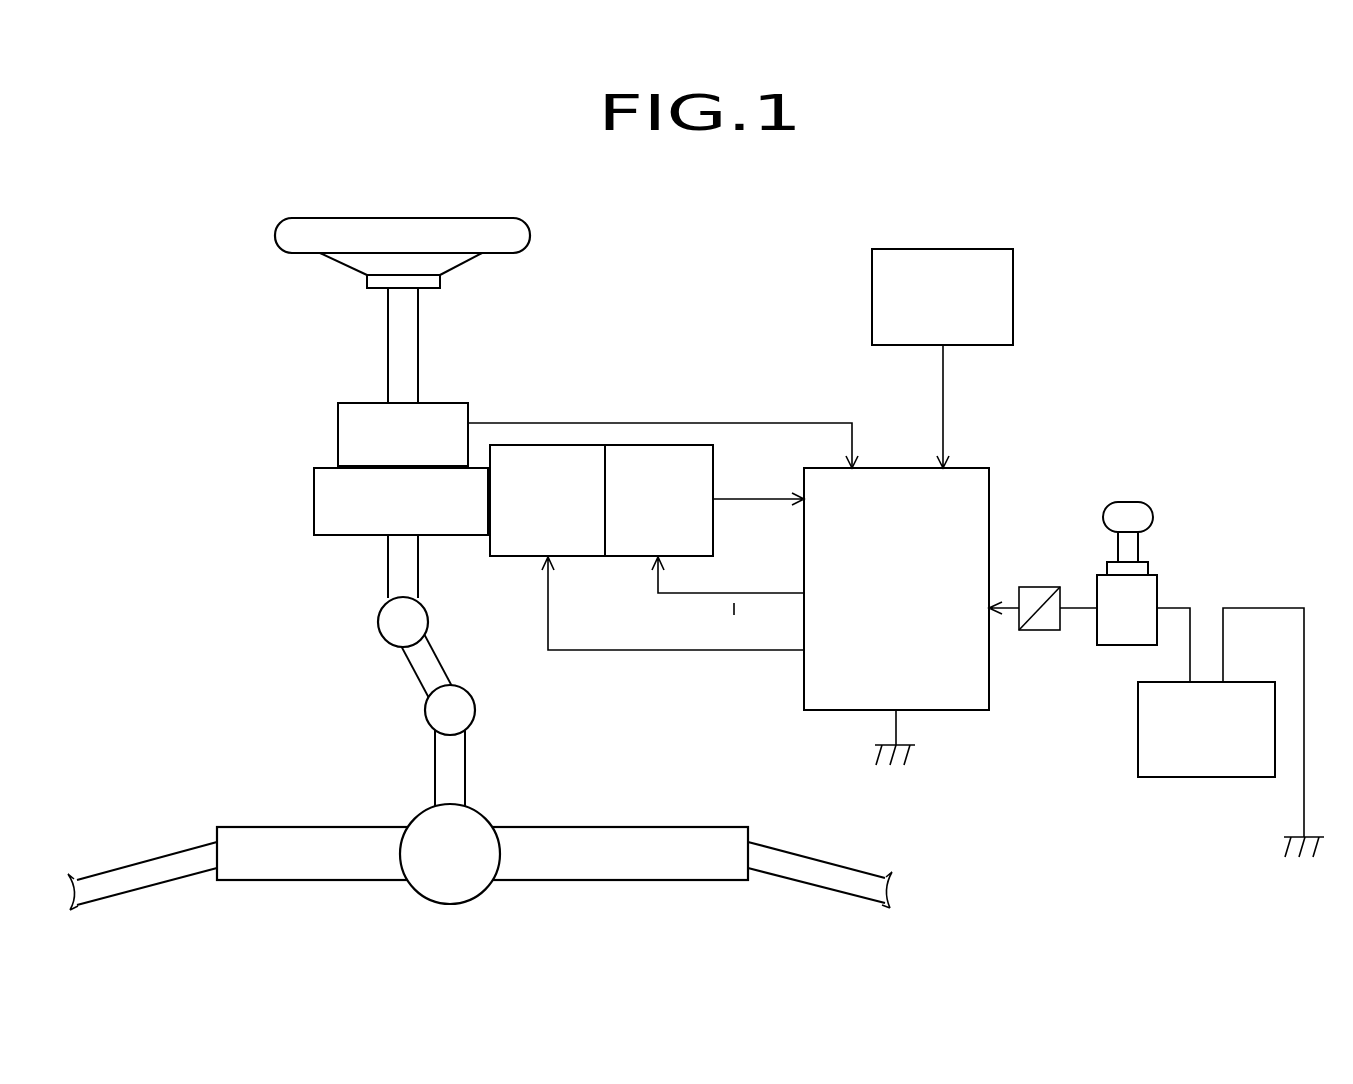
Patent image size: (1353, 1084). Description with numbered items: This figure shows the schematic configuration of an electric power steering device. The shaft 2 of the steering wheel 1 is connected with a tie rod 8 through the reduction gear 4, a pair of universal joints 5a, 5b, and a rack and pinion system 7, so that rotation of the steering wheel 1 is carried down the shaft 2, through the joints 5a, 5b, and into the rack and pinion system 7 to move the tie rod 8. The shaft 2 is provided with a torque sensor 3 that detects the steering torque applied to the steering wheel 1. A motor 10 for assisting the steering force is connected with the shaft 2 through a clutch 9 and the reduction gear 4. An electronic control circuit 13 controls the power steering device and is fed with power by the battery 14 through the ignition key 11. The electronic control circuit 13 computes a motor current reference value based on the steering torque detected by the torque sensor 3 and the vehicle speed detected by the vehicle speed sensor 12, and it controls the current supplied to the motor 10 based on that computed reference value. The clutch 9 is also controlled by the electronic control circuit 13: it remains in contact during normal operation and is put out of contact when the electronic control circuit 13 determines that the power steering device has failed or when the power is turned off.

The steering wheel 1 is at (530, 236).
The shaft 2 is at (388, 330).
The torque sensor 3 is at (338, 435).
The reduction gear 4 is at (314, 505).
The universal joint 5a is at (378, 622).
The universal joint 5b is at (425, 720).
The rack and pinion system 7 is at (492, 805).
The tie rod 8 is at (852, 868).
The clutch 9 is at (512, 558).
The motor 10 is at (630, 558).
The ignition key 11 is at (1153, 517).
The vehicle speed sensor 12 is at (1015, 295).
The electronic control circuit 13 is at (983, 468).
The battery 14 is at (1197, 778).